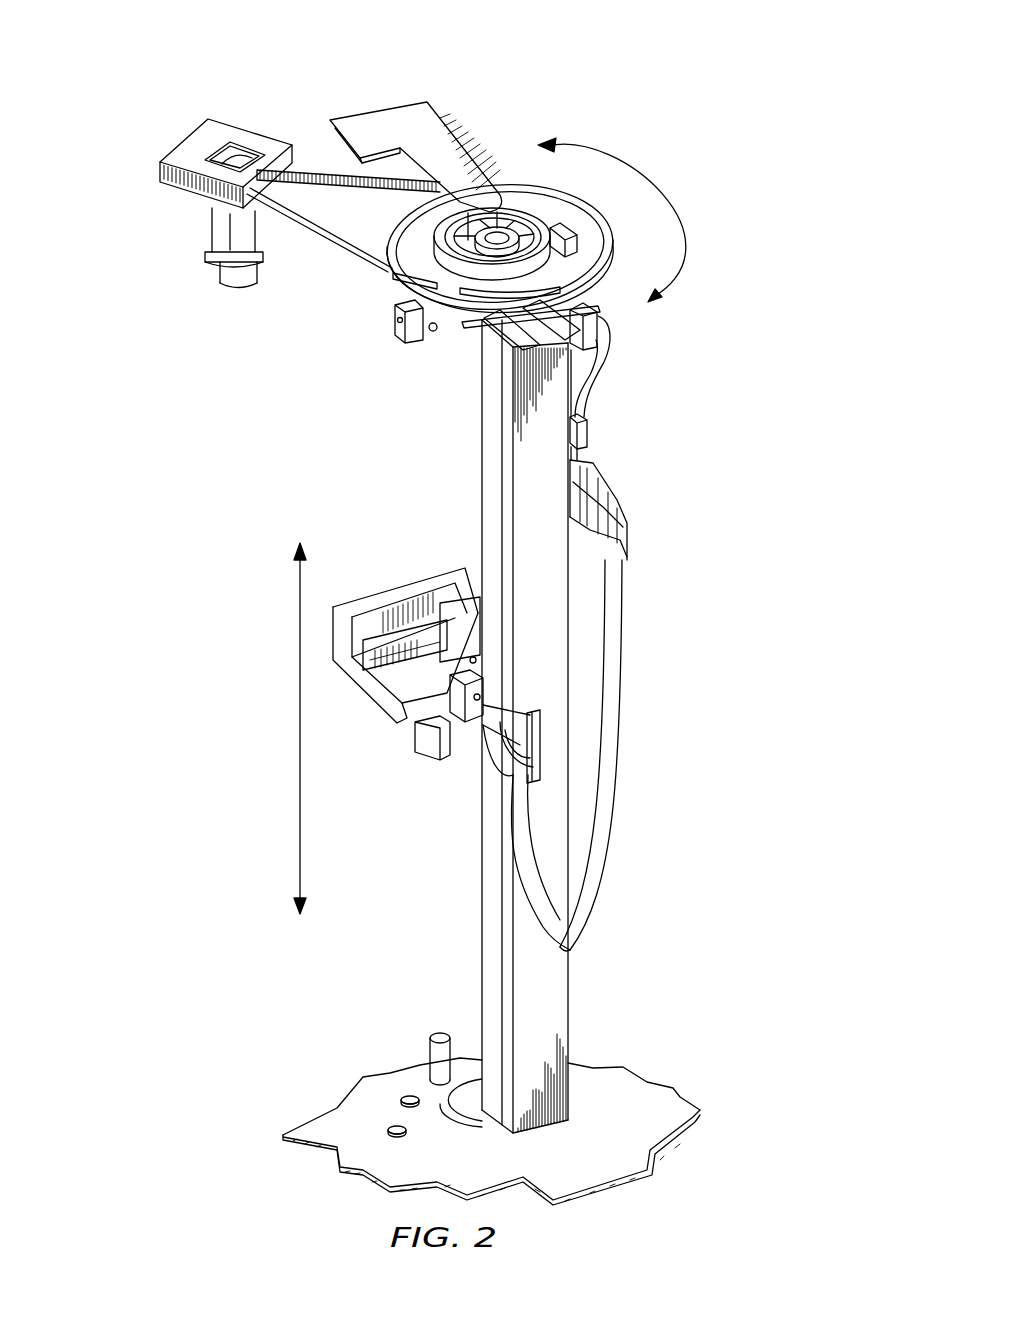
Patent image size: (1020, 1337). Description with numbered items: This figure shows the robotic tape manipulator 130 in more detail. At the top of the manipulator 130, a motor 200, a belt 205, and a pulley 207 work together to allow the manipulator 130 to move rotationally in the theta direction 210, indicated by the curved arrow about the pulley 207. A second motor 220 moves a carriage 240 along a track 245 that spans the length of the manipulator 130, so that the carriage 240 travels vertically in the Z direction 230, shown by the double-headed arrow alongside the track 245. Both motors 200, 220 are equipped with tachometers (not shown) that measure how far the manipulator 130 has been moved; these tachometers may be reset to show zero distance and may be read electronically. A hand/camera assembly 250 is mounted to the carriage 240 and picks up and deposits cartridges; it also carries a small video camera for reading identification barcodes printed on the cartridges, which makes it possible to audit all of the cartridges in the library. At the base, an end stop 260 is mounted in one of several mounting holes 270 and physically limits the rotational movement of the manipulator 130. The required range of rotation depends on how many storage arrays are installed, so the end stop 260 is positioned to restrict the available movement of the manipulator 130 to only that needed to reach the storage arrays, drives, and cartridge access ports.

The manipulator 130 is at (255, 62).
The motor 200 is at (208, 225).
The belt 205 is at (332, 250).
The pulley 207 is at (523, 186).
The theta direction 210 is at (648, 172).
The motor 220 is at (398, 326).
The Z direction 230 is at (298, 731).
The carriage 240 is at (490, 776).
The track 245 is at (486, 920).
The hand/camera assembly 250 is at (399, 578).
The end stop 260 is at (430, 1044).
The mounting holes 270 is at (419, 1100).